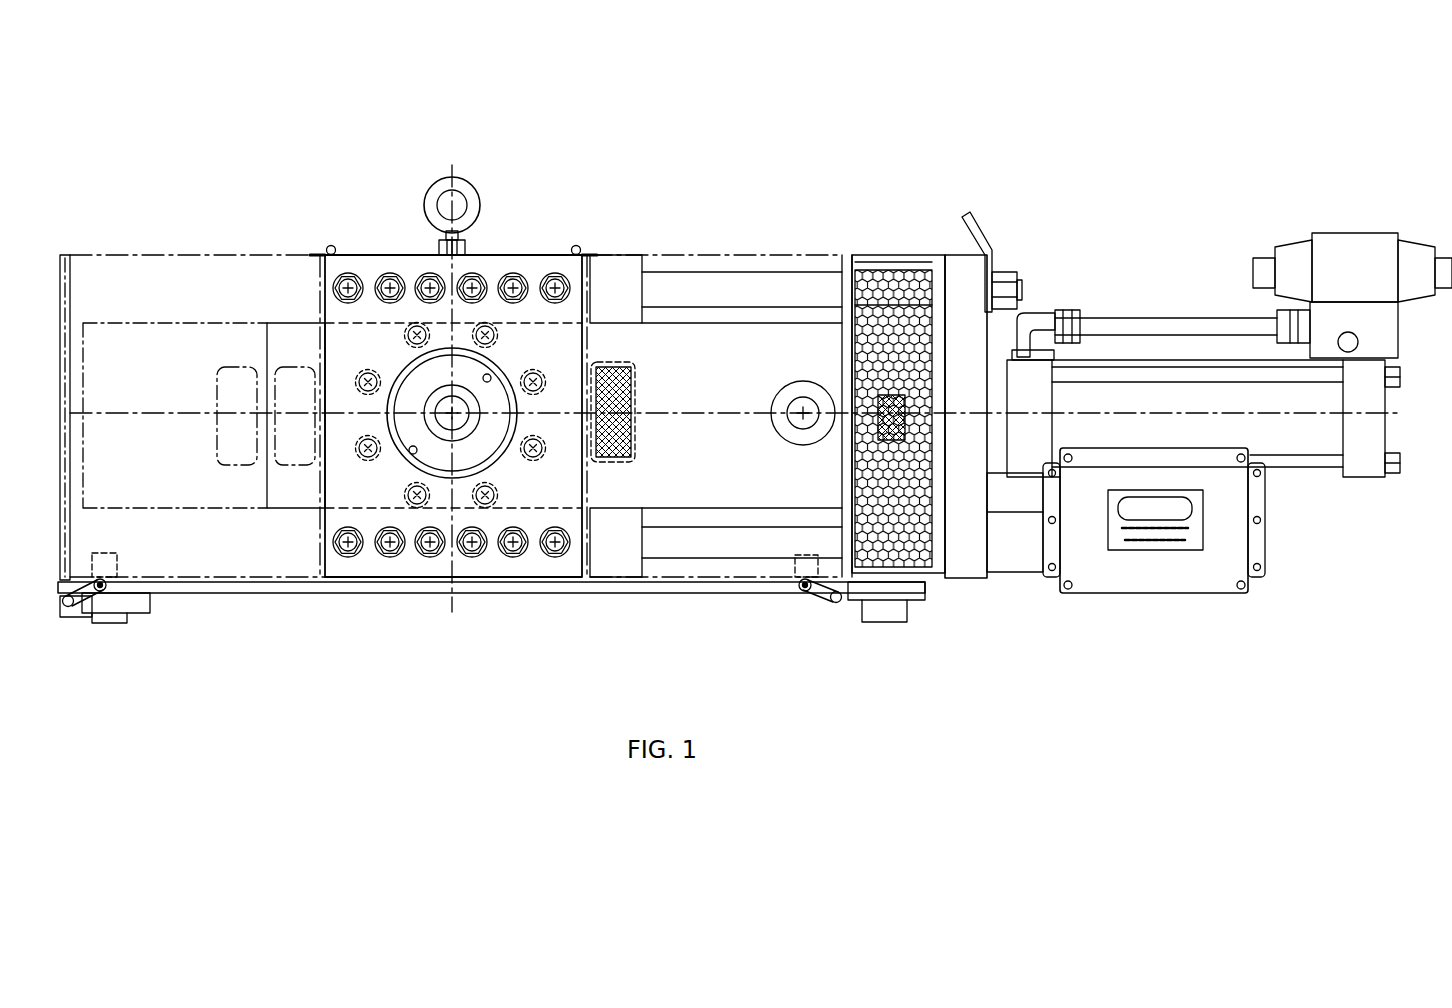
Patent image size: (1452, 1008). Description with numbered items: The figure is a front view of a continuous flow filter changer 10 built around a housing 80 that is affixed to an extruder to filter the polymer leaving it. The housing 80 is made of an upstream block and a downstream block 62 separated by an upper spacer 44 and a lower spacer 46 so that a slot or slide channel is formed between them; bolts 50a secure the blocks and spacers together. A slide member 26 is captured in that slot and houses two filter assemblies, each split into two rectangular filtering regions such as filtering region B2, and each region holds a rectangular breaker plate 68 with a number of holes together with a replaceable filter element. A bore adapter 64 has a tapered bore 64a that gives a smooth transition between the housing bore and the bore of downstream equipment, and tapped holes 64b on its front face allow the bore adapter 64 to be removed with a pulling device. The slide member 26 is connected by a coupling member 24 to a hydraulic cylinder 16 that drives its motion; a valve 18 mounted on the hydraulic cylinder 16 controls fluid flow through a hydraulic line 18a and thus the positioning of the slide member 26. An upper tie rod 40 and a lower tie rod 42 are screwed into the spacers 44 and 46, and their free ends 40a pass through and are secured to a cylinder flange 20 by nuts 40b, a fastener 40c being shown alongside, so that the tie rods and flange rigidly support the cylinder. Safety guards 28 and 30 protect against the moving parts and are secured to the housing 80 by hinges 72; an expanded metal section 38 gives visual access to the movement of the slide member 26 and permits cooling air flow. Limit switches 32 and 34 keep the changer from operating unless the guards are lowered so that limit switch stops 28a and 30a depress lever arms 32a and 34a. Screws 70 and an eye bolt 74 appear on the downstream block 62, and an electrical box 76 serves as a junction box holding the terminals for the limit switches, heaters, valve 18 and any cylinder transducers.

The filter changer 10 is at (831, 138).
The hydraulic cylinder 16 is at (1308, 440).
The valve 18 is at (1340, 240).
The hydraulic line 18a is at (1170, 318).
The cylinder flange 20 is at (968, 572).
The coupling member 24 is at (822, 385).
The slide member 26 is at (288, 330).
The safety guard 28 is at (725, 253).
The limit switch stop 28a is at (792, 575).
The safety guard 30 is at (190, 253).
The limit switch stop 30a is at (105, 578).
The limit switch 32 is at (890, 612).
The lever arm 32a is at (805, 592).
The limit switch 34 is at (128, 612).
The lever arm 34a is at (105, 600).
The expanded metal section 38 is at (887, 262).
The upper tie rod 40 is at (732, 300).
The free end 40a is at (1022, 290).
The nut 40b is at (1010, 265).
The handle 40c is at (980, 230).
The lower tie rod 42 is at (740, 540).
The upper spacer 44 is at (598, 305).
The lower spacer 46 is at (598, 554).
The bolts 50a is at (392, 275).
The downstream block 62 is at (530, 567).
The bore adapter 64 is at (492, 447).
The tapered bore 64a is at (490, 380).
The tapped holes 64b is at (410, 453).
The breaker plate 68 is at (644, 421).
The screws 70 is at (370, 372).
The hinges 72 is at (318, 249).
The eye bolt 74 is at (472, 192).
The electrical box 76 is at (1190, 582).
The housing 80 is at (470, 657).
The filtering region B2 is at (637, 388).